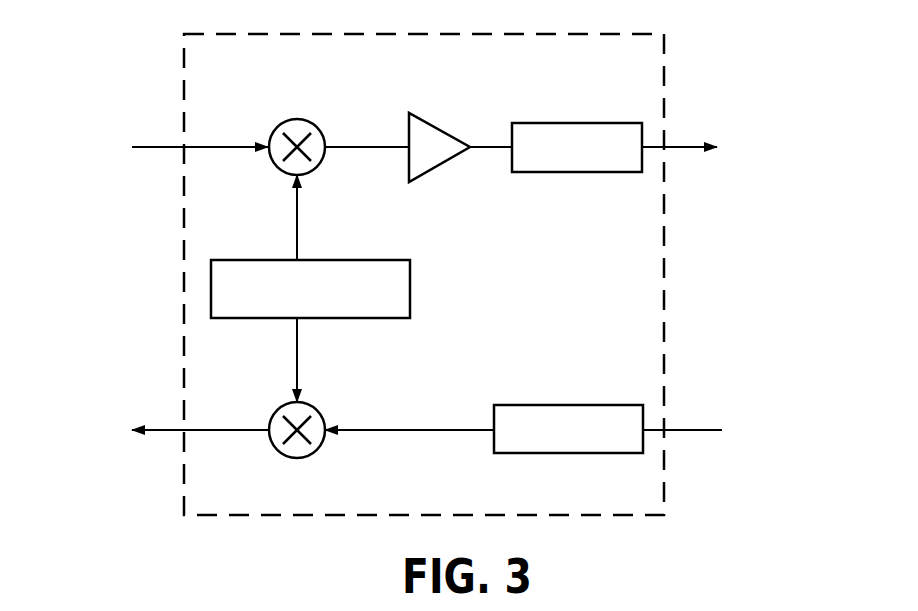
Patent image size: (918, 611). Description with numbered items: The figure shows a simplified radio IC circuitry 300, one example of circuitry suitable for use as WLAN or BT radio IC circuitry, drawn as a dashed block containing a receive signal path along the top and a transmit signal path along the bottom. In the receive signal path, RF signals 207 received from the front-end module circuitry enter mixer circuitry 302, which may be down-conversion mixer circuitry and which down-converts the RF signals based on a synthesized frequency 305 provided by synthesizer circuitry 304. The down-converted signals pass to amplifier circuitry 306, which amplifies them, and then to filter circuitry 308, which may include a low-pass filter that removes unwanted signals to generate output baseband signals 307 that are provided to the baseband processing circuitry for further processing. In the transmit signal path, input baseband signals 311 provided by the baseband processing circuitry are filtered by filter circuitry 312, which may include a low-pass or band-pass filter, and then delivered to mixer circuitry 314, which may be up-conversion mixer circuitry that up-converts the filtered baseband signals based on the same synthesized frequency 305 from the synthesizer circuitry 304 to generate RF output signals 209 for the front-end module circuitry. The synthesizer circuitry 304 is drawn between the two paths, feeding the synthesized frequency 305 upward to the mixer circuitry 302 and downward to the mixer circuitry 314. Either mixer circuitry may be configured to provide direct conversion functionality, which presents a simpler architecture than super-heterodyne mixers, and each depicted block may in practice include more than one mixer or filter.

The radio IC circuitry 300 is at (370, 33).
The RF signals 207 is at (164, 146).
The mixer circuitry 302 is at (317, 122).
The synthesizer circuitry 304 is at (410, 306).
The synthesized frequency 305 is at (297, 250).
The amplifier circuitry 306 is at (421, 119).
The output baseband signals 307 is at (683, 145).
The filter circuitry 308 is at (560, 123).
The RF output signals 209 is at (168, 428).
The input baseband signals 311 is at (680, 428).
The filter circuitry 312 is at (560, 405).
The mixer circuitry 314 is at (278, 453).